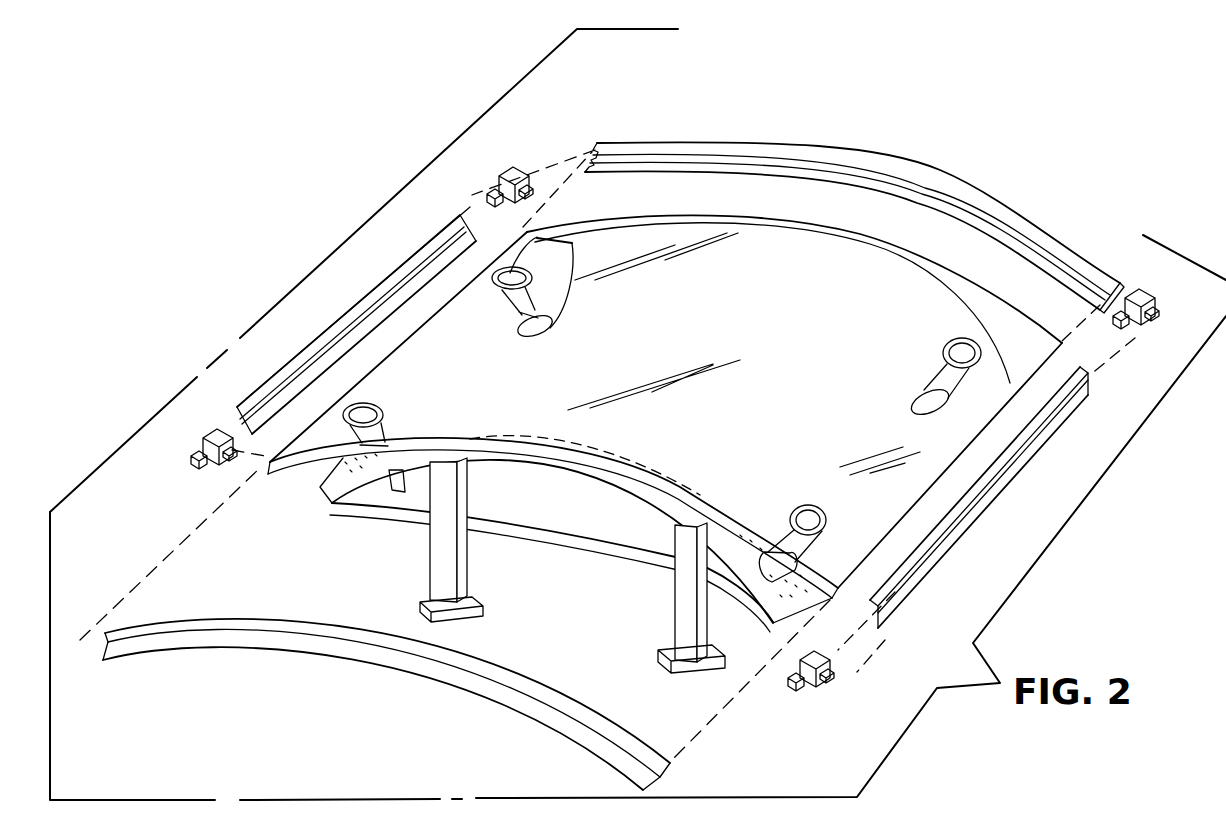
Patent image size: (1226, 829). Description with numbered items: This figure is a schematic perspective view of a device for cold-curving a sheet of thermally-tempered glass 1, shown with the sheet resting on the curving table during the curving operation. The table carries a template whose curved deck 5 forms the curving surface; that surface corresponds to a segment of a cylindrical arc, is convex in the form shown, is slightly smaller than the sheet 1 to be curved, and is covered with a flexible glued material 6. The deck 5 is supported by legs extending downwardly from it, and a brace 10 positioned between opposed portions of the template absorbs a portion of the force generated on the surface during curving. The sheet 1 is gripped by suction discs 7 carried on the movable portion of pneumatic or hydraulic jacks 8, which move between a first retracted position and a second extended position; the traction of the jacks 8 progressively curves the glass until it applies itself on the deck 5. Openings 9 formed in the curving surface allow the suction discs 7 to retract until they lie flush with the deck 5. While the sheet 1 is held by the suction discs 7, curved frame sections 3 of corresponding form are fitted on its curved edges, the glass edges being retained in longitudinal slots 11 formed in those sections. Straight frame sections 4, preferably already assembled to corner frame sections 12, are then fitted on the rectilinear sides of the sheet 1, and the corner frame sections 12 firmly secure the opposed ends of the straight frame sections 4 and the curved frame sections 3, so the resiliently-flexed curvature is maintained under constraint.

The sheet of thermally-tempered glass 1 is at (447, 300).
The curved frame sections 3 is at (1080, 260).
The straight frame sections 4 is at (343, 316).
The curved deck 5 is at (955, 337).
The flexible glued material 6 is at (340, 467).
The suction discs 7 is at (512, 268).
The jacks 8 is at (393, 490).
The openings 9 is at (575, 247).
The brace 10 is at (600, 565).
The longitudinal slots 11 is at (452, 238).
The corner frame sections 12 is at (502, 170).